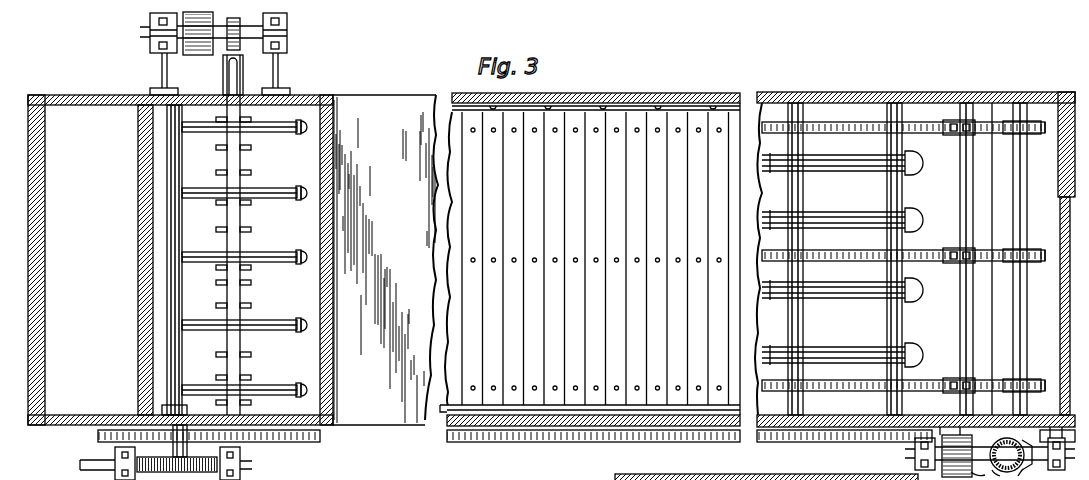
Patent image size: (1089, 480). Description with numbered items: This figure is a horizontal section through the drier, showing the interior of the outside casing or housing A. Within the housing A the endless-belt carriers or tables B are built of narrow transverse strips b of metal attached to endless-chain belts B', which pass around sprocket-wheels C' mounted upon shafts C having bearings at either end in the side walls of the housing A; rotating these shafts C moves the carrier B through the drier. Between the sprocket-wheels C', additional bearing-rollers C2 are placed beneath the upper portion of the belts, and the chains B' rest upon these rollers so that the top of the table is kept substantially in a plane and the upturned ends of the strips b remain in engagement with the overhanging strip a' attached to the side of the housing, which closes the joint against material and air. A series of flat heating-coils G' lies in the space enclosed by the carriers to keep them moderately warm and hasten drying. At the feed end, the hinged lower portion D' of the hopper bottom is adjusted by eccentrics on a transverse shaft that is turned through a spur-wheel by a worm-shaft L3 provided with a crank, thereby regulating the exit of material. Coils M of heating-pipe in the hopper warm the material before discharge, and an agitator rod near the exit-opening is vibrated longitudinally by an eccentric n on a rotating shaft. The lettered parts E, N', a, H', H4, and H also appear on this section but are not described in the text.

The tank compartment E is at (180, 260).
The hinged lower portion of hopper bottom D' is at (181, 281).
The stirrer shaft N' is at (215, 213).
The eccentric n is at (240, 38).
The heating-coils M is at (280, 191).
The outside casing or housing A is at (603, 452).
The overhanging strip a' is at (596, 91).
The endless-belt carriers or tables B is at (592, 259).
The transverse strips b is at (739, 259).
The lower rail a is at (590, 437).
The track rail H' is at (185, 445).
The worm-shaft L3 is at (240, 465).
The track rail H4 is at (335, 442).
The frame H is at (824, 243).
The endless-chain belts B' is at (903, 265).
The sprocket-wheels C' is at (991, 267).
The bearing-rollers C2 is at (808, 194).
The flat heating-coils G' is at (842, 259).
The shafts C is at (1002, 259).